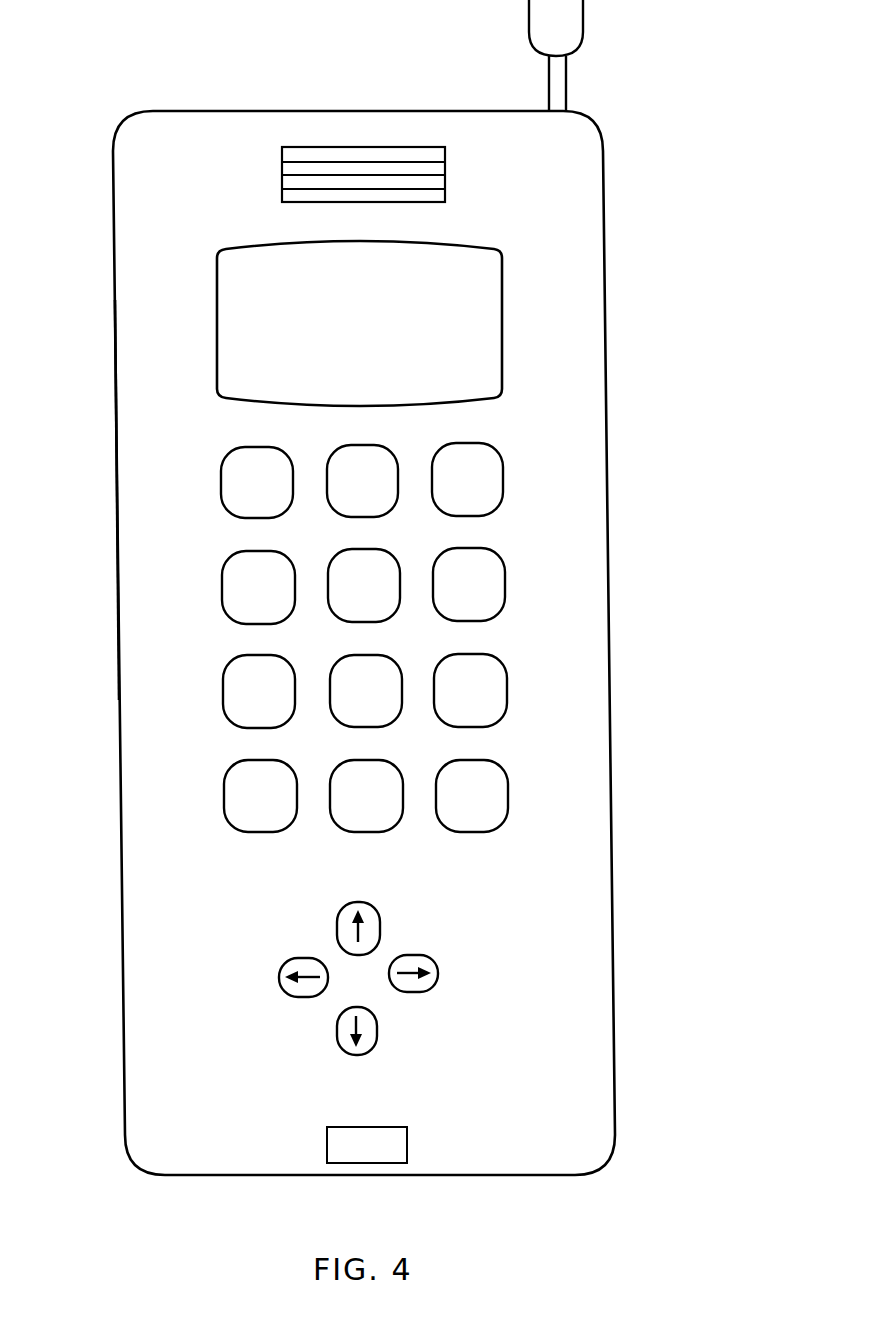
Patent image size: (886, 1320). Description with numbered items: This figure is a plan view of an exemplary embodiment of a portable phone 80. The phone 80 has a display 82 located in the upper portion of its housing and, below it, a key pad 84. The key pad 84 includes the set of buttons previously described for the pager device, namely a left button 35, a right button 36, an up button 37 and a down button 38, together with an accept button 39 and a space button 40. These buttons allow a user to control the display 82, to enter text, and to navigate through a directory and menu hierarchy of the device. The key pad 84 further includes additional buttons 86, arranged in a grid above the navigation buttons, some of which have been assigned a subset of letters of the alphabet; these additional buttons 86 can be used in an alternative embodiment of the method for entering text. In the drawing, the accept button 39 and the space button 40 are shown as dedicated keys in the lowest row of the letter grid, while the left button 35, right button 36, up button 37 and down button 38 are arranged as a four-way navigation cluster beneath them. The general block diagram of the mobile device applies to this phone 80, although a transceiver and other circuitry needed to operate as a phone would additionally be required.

The portable phone 80 is at (106, 182).
The display 82 is at (502, 318).
The key pad 84 is at (580, 608).
The additional buttons 86 is at (86, 525).
The accept button 39 is at (507, 793).
The space button 40 is at (222, 796).
The left button 35 is at (279, 983).
The right button 36 is at (438, 974).
The up button 37 is at (354, 901).
The down button 38 is at (353, 1057).